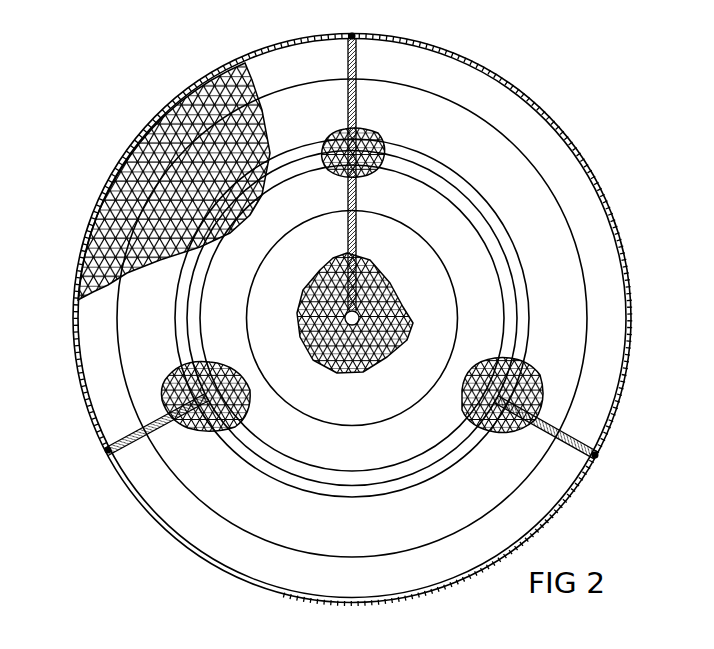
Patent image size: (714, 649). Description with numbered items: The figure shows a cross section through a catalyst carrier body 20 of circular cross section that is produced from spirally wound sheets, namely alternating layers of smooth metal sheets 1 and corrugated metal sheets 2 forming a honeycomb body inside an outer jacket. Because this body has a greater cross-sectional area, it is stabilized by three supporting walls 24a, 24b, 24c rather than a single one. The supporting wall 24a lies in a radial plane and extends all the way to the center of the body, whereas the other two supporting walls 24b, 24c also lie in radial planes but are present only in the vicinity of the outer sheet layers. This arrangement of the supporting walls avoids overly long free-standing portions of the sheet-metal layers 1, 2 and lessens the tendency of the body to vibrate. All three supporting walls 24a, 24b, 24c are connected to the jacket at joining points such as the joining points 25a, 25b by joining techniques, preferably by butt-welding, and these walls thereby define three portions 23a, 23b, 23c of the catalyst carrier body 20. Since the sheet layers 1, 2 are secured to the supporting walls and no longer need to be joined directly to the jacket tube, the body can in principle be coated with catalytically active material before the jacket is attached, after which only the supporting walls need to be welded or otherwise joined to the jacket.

The smooth metal sheets 1 is at (177, 112).
The corrugated metal sheets 2 is at (208, 97).
The catalyst carrier body 20 is at (522, 171).
The portion of the catalyst carrier body 23a is at (596, 181).
The portion of the catalyst carrier body 23b is at (170, 530).
The portion of the catalyst carrier body 23c is at (82, 380).
The supporting wall 24a is at (358, 119).
The supporting wall 24b is at (560, 448).
The supporting wall 24c is at (137, 443).
The joining point 25a is at (355, 32).
The joining point 25b is at (597, 457).